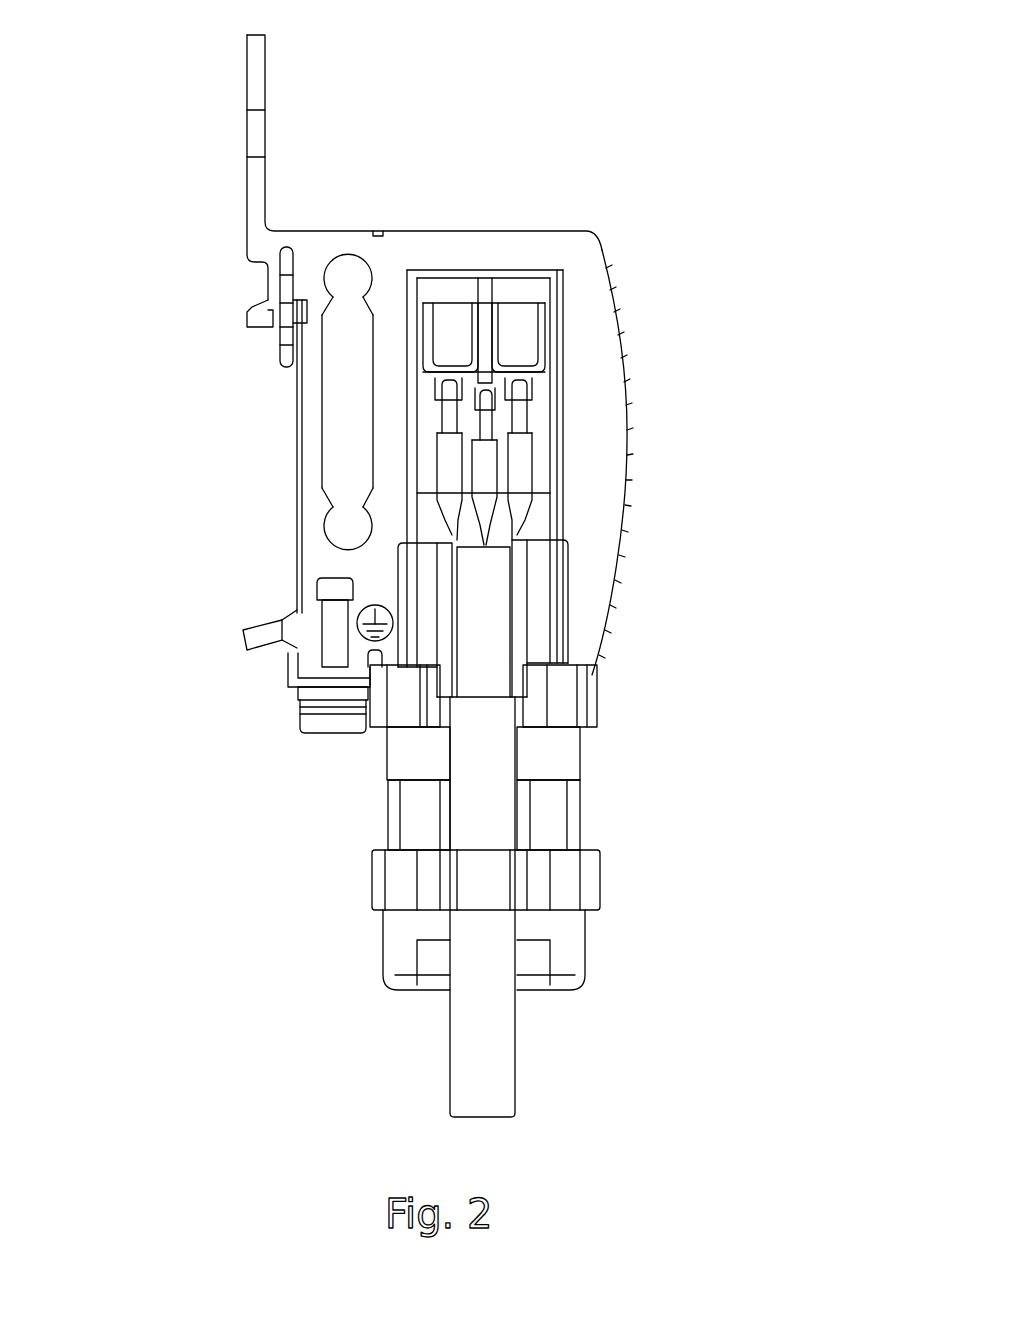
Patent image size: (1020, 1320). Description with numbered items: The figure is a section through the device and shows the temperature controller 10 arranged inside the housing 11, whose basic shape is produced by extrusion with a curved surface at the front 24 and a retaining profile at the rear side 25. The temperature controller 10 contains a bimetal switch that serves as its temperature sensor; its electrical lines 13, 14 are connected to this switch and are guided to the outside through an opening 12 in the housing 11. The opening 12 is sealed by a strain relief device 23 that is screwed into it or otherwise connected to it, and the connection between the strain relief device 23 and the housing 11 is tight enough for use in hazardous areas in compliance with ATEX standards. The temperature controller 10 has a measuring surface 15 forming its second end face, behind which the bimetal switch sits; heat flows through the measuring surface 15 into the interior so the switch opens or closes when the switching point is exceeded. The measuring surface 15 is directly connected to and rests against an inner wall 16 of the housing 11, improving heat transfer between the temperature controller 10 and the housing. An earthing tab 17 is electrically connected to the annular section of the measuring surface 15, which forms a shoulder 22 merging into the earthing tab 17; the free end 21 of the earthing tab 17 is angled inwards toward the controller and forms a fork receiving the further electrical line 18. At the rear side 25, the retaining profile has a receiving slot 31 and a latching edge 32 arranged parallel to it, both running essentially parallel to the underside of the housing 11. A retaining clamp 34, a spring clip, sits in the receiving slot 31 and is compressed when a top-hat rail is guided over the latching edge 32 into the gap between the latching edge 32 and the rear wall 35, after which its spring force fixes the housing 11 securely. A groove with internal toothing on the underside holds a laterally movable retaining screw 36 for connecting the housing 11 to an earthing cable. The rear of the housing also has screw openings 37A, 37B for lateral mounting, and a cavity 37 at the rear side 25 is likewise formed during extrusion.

The temperature controller 10 is at (522, 343).
The housing 11 is at (587, 281).
The opening 12 is at (570, 618).
The electrical line 13 is at (518, 476).
The electrical line 14 is at (448, 476).
The measuring surface 15 is at (458, 272).
The inner wall 16 is at (562, 272).
The earthing tab 17 is at (485, 330).
The further electrical line 18 is at (480, 462).
The free end 21 is at (497, 413).
The shoulder 22 is at (427, 308).
The strain relief device 23 is at (598, 880).
The front 24 is at (627, 457).
The rear side 25 is at (300, 463).
The receiving slot 31 is at (298, 332).
The latching edge 32 is at (257, 623).
The retaining clamp 34 is at (287, 350).
The rear wall 35 is at (300, 413).
The retaining screw 36 is at (335, 713).
The cavity 37 is at (345, 393).
The screw opening 37A is at (345, 283).
The screw opening 37B is at (350, 537).